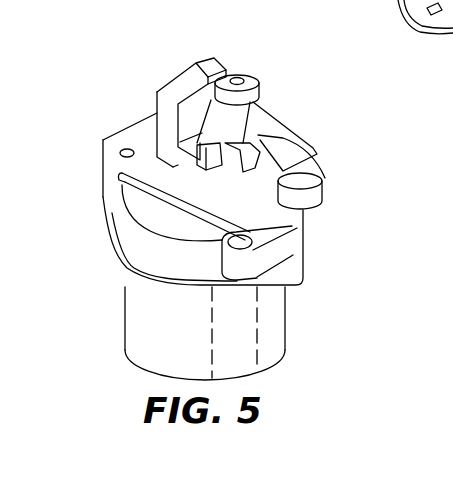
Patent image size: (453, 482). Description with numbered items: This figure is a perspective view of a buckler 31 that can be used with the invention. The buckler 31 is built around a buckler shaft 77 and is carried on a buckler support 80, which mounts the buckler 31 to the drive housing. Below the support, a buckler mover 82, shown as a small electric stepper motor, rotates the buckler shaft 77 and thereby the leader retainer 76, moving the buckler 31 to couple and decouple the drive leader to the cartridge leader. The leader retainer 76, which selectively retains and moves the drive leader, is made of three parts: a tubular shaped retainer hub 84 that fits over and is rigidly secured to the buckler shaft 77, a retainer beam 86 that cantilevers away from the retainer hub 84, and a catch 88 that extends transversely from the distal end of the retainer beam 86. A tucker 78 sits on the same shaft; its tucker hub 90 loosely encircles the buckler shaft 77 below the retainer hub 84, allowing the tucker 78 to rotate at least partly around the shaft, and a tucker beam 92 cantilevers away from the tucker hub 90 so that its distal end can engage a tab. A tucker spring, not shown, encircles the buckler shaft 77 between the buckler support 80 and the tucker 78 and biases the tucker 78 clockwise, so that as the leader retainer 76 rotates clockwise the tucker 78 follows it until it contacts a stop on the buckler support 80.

The buckler 31 is at (330, 257).
The leader retainer 76 is at (192, 98).
The buckler shaft 77 is at (237, 78).
The tucker 78 is at (323, 176).
The buckler support 80 is at (103, 140).
The buckler mover 82 is at (125, 310).
The retainer hub 84 is at (257, 98).
The retainer beam 86 is at (257, 108).
The catch 88 is at (200, 153).
The tucker hub 90 is at (257, 140).
The tucker beam 92 is at (303, 162).